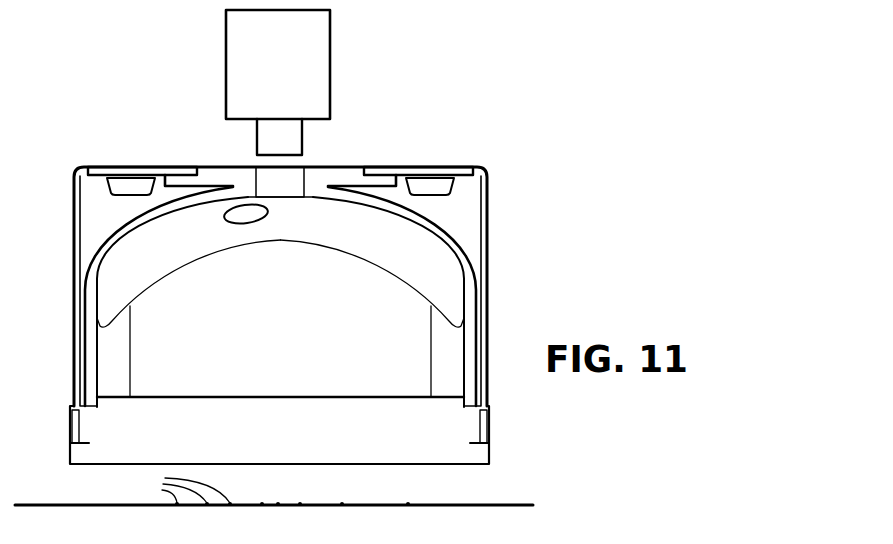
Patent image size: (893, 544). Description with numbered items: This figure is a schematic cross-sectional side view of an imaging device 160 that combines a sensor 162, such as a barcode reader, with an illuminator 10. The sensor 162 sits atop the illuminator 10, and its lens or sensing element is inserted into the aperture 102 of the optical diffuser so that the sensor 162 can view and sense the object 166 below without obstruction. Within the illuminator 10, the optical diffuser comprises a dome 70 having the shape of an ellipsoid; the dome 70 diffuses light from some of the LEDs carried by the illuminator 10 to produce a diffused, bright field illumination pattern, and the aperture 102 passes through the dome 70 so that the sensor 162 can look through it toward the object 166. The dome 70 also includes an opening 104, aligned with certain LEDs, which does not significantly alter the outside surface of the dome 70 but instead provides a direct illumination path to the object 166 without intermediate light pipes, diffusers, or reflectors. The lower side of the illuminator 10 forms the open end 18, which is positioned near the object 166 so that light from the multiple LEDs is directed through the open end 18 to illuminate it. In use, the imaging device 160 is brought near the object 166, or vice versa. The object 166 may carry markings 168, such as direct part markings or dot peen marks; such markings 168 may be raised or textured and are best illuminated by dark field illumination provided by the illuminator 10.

The imaging device 160 is at (585, 151).
The sensor 162 is at (317, 82).
The illuminator 10 is at (486, 289).
The aperture 102 is at (303, 191).
The dome 70 is at (436, 232).
The opening 104 is at (229, 221).
The open end 18 is at (277, 453).
The object 166 is at (503, 503).
The markings 168 is at (178, 486).